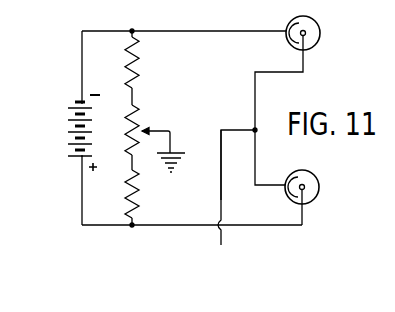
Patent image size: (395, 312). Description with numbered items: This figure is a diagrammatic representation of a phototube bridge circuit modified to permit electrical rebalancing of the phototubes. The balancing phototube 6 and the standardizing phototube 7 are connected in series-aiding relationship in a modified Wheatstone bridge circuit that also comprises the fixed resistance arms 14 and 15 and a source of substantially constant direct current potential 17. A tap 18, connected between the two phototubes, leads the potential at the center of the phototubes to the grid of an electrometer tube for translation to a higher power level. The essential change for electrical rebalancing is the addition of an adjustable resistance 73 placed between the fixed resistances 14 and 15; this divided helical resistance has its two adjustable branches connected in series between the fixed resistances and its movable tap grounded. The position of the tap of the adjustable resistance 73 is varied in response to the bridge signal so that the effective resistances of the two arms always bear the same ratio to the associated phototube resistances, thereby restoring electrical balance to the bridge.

The balancing phototube 6 is at (292, 19).
The standardizing phototube 7 is at (316, 198).
The resistance arm 14 is at (138, 62).
The resistance arm 15 is at (138, 195).
The source of substantially constant direct current potential 17 is at (72, 119).
The tap 18 is at (220, 198).
The adjustable resistance 73 is at (146, 130).